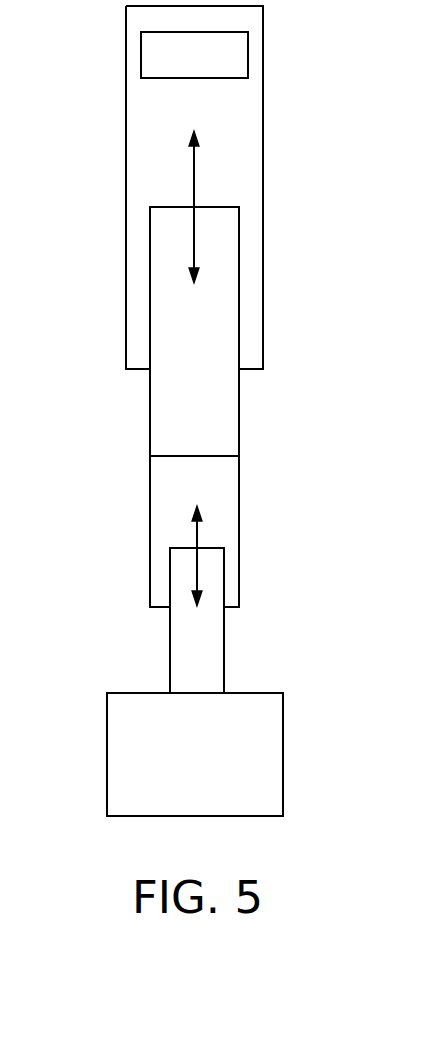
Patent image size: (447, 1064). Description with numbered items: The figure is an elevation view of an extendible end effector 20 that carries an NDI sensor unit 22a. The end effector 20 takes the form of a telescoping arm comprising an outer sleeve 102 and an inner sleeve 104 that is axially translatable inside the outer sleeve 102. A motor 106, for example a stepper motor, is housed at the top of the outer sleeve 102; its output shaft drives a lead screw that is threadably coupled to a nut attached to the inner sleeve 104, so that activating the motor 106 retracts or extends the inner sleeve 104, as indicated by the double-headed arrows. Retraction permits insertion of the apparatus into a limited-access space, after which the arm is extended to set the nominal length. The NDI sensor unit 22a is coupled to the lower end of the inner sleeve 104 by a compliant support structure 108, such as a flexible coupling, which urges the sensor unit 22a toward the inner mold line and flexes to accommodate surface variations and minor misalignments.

The end effector 20 is at (288, 282).
The NDI sensor unit 22a is at (283, 752).
The outer sleeve 102 is at (263, 156).
The inner sleeve 104 is at (239, 430).
The motor 106 is at (141, 57).
The compliant support structure 108 is at (224, 668).